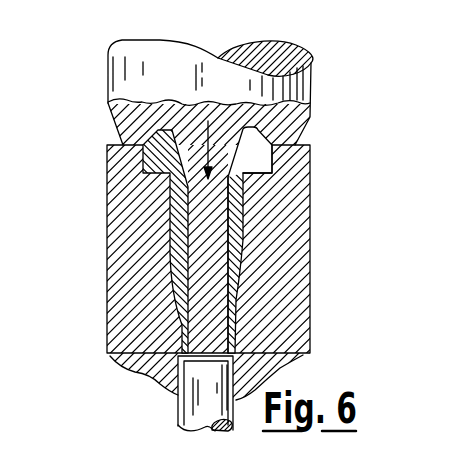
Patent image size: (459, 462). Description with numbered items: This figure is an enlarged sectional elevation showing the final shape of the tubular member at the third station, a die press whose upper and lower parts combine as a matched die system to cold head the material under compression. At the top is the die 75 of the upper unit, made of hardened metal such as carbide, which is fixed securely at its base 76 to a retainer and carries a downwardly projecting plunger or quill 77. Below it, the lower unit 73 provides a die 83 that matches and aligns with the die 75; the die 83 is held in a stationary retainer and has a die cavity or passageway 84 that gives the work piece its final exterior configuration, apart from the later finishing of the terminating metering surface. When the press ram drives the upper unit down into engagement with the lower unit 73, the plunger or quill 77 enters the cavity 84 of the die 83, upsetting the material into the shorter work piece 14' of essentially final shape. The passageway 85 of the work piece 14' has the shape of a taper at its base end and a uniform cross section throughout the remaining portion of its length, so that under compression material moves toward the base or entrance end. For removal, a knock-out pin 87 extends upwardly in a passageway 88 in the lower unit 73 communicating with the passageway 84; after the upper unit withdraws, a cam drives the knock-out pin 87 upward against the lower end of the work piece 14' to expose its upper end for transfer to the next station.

The die 75 is at (108, 63).
The base 76 is at (310, 89).
The work piece 14' is at (298, 240).
The die cavity or passageway 84 is at (250, 196).
The die 83 is at (297, 206).
The passageway 85 is at (216, 229).
The plunger or quill 77 is at (213, 252).
The lower unit 73 is at (280, 370).
The passageway 88 is at (198, 375).
The knock-out pin 87 is at (176, 411).